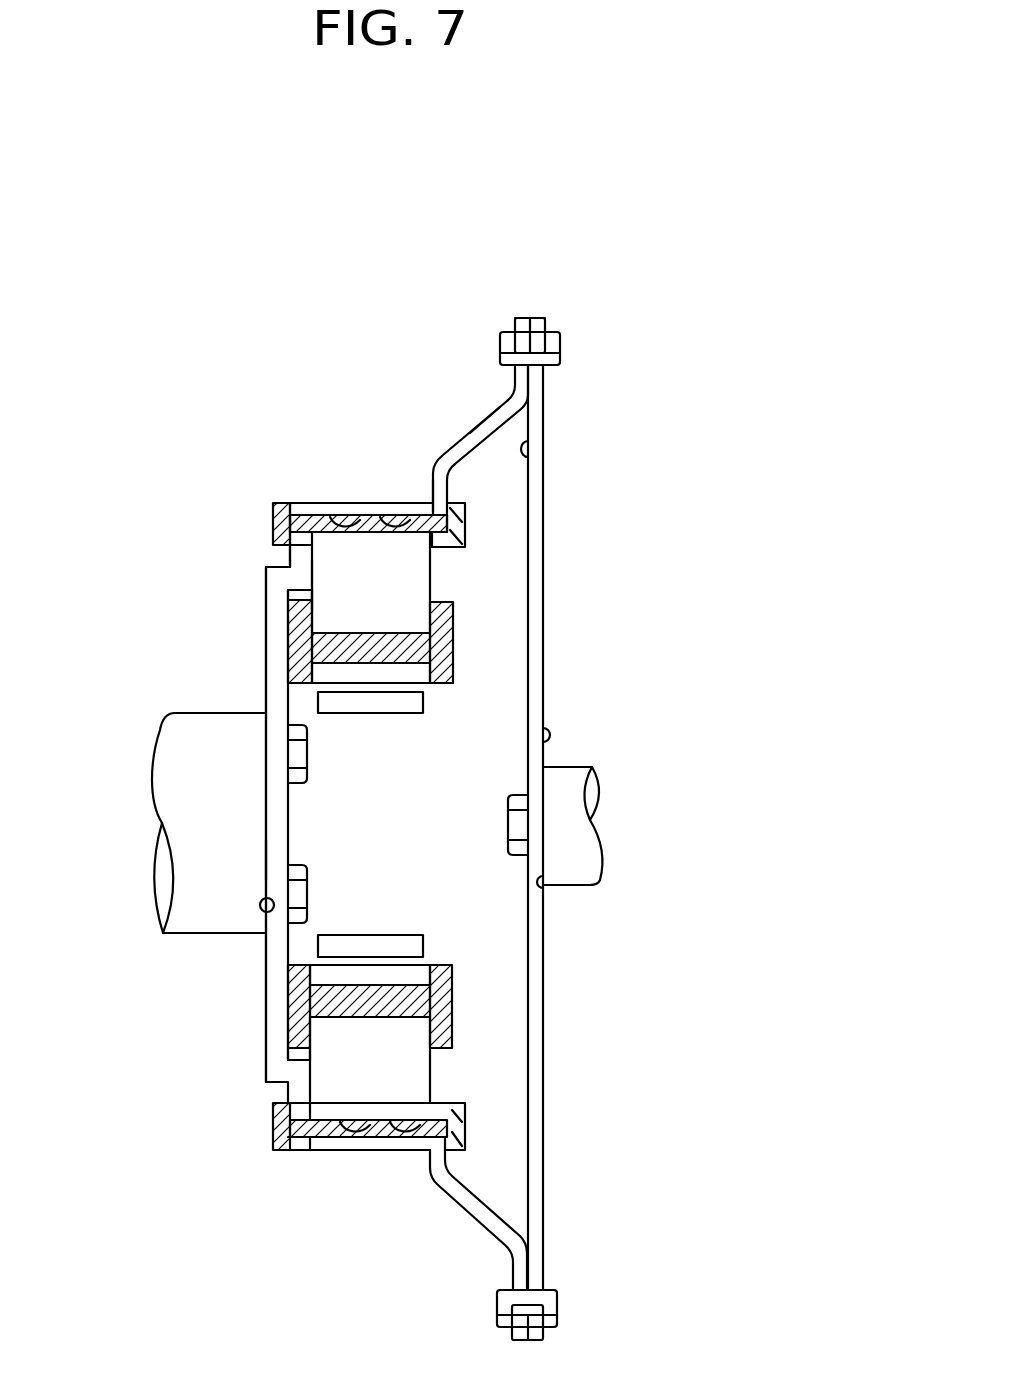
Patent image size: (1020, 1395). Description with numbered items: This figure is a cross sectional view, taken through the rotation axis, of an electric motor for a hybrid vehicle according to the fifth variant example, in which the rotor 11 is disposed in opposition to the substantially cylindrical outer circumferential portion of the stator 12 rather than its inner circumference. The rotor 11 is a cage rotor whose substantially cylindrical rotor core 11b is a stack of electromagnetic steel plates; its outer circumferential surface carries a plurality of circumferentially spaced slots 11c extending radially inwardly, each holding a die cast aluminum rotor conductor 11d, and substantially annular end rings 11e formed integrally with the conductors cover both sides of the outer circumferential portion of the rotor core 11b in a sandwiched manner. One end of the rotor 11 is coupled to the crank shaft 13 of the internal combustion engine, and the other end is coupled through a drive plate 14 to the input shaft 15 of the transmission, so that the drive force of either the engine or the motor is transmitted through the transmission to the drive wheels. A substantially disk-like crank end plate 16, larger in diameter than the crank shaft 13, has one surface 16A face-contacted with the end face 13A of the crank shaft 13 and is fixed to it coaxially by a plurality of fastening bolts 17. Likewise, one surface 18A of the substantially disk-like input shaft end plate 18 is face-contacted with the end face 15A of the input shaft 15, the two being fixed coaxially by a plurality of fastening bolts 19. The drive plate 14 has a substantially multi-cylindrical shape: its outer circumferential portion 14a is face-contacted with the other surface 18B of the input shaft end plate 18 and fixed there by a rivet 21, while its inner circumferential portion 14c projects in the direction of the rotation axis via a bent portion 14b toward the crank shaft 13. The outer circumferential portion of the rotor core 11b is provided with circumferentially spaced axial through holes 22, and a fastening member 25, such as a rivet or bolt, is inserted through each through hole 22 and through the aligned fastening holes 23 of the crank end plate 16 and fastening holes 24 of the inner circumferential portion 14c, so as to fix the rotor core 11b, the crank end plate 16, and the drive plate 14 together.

The rotor 11 is at (458, 576).
The rotor core 11b is at (327, 577).
The slot 11c is at (305, 652).
The rotor conductor 11d is at (388, 648).
The end ring 11e is at (300, 612).
The stator 12 is at (373, 708).
The crank shaft 13 is at (180, 798).
The end face 13A is at (260, 900).
The drive plate 14 is at (486, 374).
The outer circumferential portion 14a is at (523, 317).
The bent portion 14b is at (483, 415).
The inner circumferential portion 14c is at (435, 492).
The input shaft 15 is at (583, 857).
The end face 15A is at (540, 893).
The crank end plate 16 is at (273, 787).
The surface 16A is at (263, 860).
The fastening bolt 17 is at (308, 757).
The input shaft end plate 18 is at (540, 487).
The surface 18A is at (530, 727).
The other surface 18B is at (530, 440).
The fastening bolt 19 is at (508, 828).
The rivet 21 is at (562, 347).
The through hole 22 is at (340, 520).
The fastening hole 23 is at (277, 523).
The fastening hole 24 is at (387, 520).
The fastening member 25 is at (467, 527).